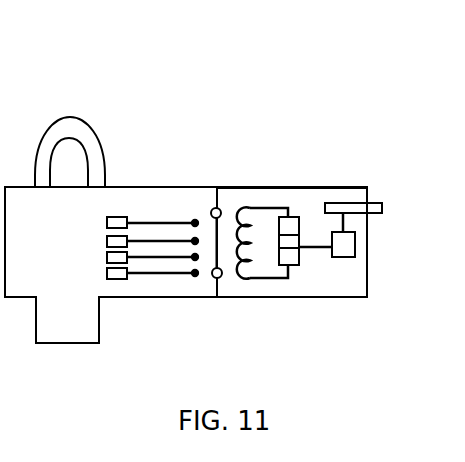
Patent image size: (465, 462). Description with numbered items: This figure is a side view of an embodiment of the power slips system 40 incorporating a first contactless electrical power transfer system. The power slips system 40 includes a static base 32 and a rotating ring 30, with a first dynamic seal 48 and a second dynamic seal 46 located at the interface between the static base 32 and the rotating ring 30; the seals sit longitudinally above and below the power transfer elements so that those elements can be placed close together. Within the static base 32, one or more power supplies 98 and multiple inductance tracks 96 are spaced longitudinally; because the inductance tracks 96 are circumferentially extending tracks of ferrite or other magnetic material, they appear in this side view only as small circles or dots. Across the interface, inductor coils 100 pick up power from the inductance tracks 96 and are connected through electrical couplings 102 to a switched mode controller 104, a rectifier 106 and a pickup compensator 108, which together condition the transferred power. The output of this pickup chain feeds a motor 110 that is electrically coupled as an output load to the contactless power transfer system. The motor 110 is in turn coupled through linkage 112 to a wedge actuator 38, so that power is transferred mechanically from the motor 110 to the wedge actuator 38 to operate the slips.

The power slips system 40 is at (276, 69).
The static base 32 is at (136, 196).
The rotating ring 30 is at (251, 287).
The power supplies 98 is at (126, 281).
The inductance tracks 96 is at (194, 277).
The first dynamic seal 48 is at (214, 208).
The second dynamic seal 46 is at (218, 278).
The inductor coils 100 is at (246, 205).
The electrical couplings 102 is at (265, 206).
The switched mode controller 104 is at (293, 216).
The rectifier 106 is at (299, 238).
The pickup compensator 108 is at (296, 266).
The motor 110 is at (343, 257).
The connection to contact bar 112 is at (345, 225).
The wedge actuator 38 is at (375, 203).